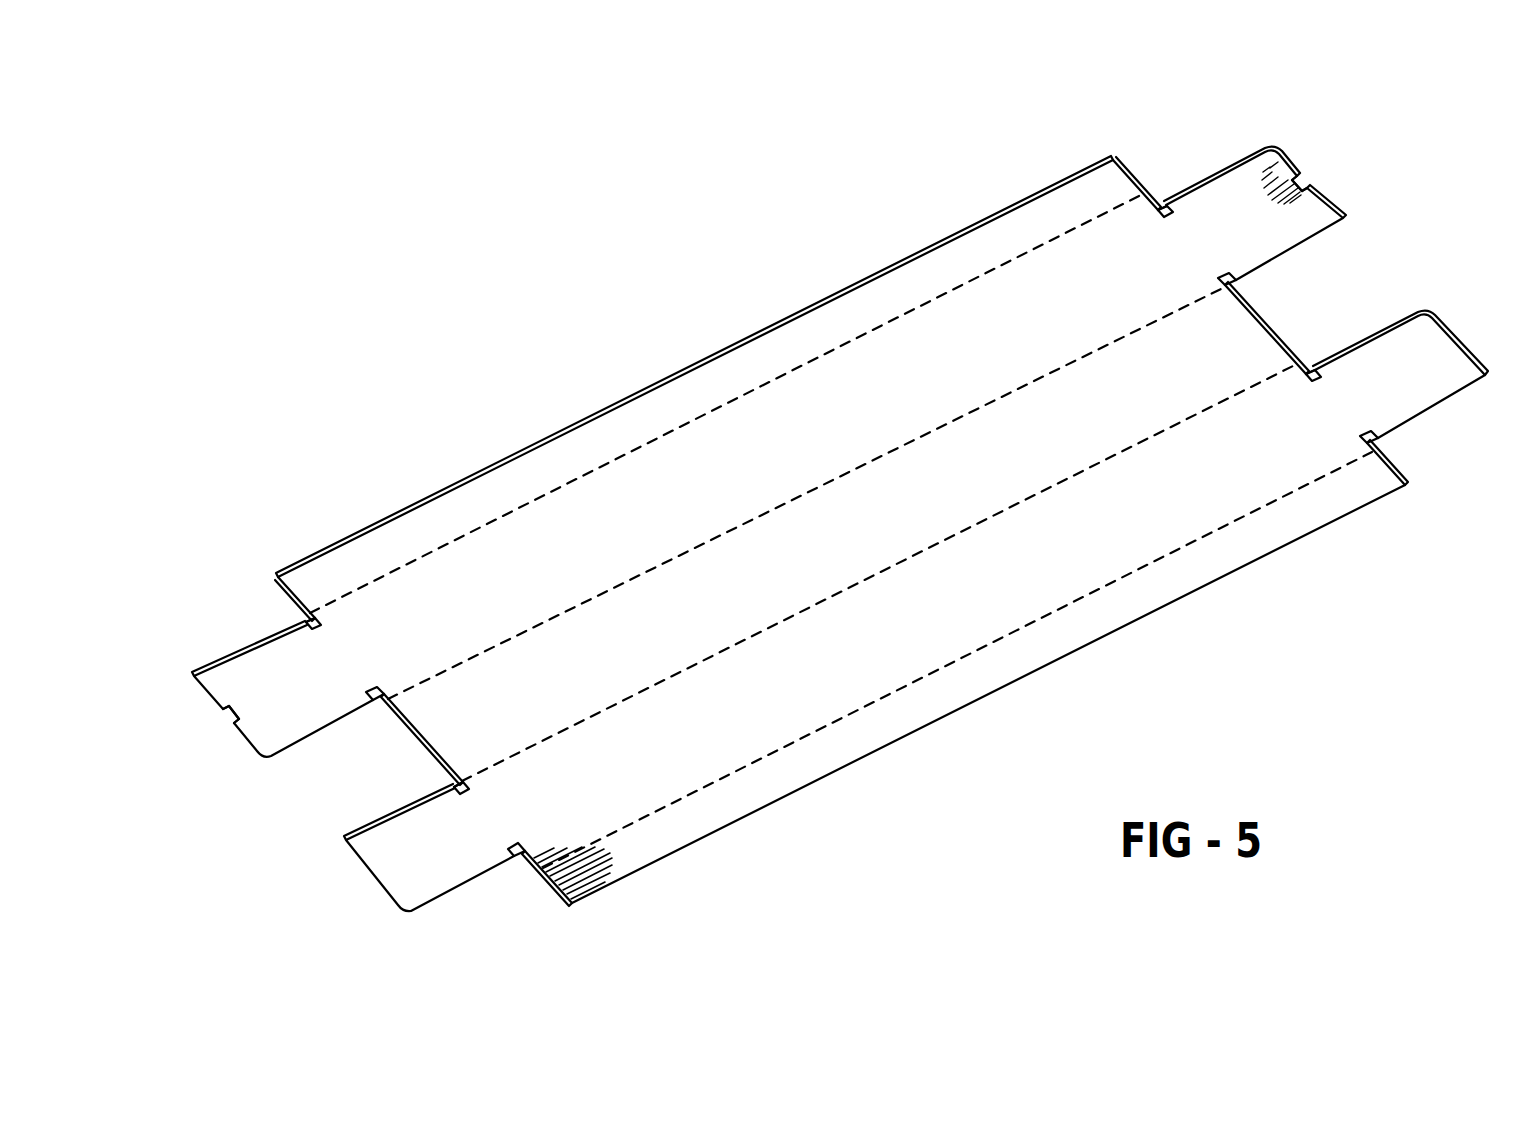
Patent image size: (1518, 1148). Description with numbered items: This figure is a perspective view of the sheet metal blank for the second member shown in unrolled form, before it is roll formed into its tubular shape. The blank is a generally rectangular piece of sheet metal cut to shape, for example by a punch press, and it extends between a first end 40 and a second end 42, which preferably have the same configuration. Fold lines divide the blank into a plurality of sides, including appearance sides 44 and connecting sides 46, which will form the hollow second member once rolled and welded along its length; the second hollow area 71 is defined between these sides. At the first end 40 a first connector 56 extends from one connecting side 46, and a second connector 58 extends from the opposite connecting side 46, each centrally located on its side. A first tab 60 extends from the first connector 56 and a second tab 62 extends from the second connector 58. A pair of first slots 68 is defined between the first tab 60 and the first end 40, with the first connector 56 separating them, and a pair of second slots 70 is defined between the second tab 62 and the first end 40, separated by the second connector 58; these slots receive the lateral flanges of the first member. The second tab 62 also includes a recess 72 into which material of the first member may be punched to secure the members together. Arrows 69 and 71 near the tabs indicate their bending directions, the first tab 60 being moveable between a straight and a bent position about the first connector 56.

The first end 40 is at (272, 572).
The second end 42 is at (1107, 155).
The appearance side 44 is at (722, 400).
The connecting side 46 is at (767, 471).
The first connector 56 is at (478, 813).
The second connector 58 is at (328, 650).
The first tab 60 is at (441, 866).
The second tab 62 is at (292, 704).
The first slot 68 is at (470, 787).
The fold direction arrow 69 is at (487, 828).
The second slot 70 is at (321, 625).
The second hollow area 71 is at (337, 665).
The recess 72 is at (228, 722).